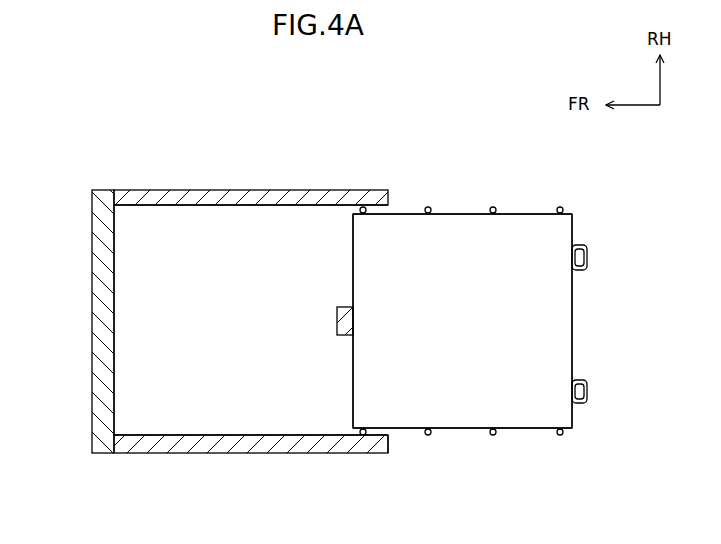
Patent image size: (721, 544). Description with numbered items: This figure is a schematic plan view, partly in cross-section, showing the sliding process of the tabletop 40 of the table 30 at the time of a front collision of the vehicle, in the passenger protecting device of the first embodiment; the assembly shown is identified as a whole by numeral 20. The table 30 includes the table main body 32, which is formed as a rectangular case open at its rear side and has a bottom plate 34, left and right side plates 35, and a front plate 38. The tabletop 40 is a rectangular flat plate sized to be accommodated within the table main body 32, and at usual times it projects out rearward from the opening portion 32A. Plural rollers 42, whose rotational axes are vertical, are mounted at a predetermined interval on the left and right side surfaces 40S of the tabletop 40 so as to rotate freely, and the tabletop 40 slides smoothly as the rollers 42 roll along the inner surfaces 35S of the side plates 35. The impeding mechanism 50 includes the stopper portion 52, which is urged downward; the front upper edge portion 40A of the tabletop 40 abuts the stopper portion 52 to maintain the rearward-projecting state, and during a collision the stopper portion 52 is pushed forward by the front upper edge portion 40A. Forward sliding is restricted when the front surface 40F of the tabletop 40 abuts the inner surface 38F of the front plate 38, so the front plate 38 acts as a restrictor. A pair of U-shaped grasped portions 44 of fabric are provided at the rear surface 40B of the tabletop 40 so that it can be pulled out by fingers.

The battery pack mounting structure 20 is at (217, 152).
The table 30 is at (160, 178).
The table main body 32 is at (92, 188).
The opening portion 32A is at (388, 432).
The bottom plate 34 is at (150, 428).
The side plates 35 is at (307, 188).
The inner surfaces 35S is at (175, 206).
The front plate 38 is at (90, 300).
The inner surface 38F is at (115, 345).
The tabletop 40 is at (575, 312).
The front upper edge portion 40A is at (353, 250).
The rear surface 40B is at (575, 228).
The side surfaces 40S is at (532, 210).
The front surface 40F is at (352, 370).
The rollers 42 is at (428, 206).
The grasped portions 44 is at (588, 258).
The impeding mechanism 50 is at (330, 305).
The stopper portion 52 is at (337, 325).